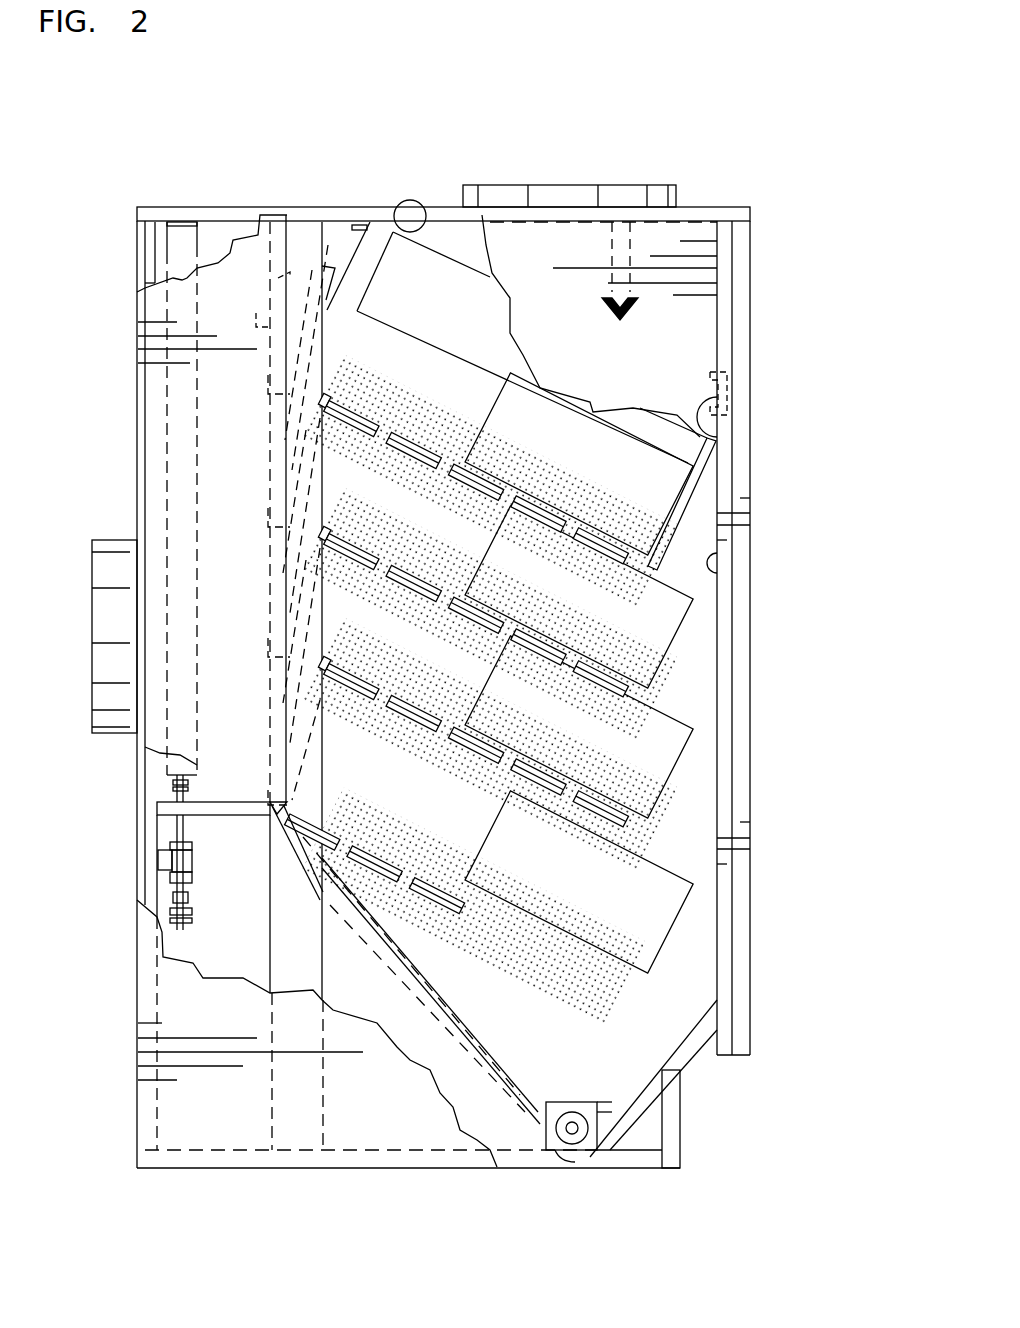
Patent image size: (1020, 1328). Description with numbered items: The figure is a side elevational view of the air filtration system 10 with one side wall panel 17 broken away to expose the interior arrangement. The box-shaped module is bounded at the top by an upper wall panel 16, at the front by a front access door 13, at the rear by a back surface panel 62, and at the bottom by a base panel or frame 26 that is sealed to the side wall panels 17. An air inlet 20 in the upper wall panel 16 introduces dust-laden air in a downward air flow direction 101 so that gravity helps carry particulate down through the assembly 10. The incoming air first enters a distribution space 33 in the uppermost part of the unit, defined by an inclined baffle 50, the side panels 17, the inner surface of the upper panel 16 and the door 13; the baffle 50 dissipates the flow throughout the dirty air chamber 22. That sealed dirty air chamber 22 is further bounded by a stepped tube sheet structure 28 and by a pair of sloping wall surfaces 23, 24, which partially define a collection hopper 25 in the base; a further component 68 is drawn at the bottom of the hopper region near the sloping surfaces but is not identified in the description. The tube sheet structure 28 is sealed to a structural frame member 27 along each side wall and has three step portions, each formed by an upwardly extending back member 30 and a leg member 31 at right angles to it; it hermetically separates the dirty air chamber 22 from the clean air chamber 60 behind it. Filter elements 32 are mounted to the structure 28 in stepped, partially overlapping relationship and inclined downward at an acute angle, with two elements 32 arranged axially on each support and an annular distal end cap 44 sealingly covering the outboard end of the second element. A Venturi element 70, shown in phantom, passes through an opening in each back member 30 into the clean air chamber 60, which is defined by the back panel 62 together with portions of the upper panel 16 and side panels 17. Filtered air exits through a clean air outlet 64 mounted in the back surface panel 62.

The air filtration system 10 is at (533, 148).
The front access door 13 is at (752, 244).
The upper wall panel 16 is at (342, 207).
The side wall panel 17 is at (276, 212).
The air inlet 20 is at (590, 184).
The dirty air chamber 22 is at (713, 575).
The sloping wall surface 23 is at (664, 1068).
The sloping wall surface 24 is at (507, 1078).
The collection area or hopper 25 is at (633, 1085).
The bottom base panel or frame 26 is at (272, 1152).
The structural frame member 27 is at (292, 927).
The tube sheet structure 28 is at (271, 297).
The back member 30 is at (268, 637).
The leg member 31 is at (298, 394).
The filter element 32 is at (655, 621).
The distribution space 33 is at (704, 227).
The annular distal end cap 44 is at (688, 920).
The inclined baffle 50 is at (645, 346).
The clean air chamber 60 is at (195, 378).
The back surface panel 62 is at (134, 445).
The clean air outlet 64 is at (120, 706).
The belt roller 68 is at (563, 1142).
The Venturi element 70 is at (263, 582).
The air flow direction 101 is at (630, 237).